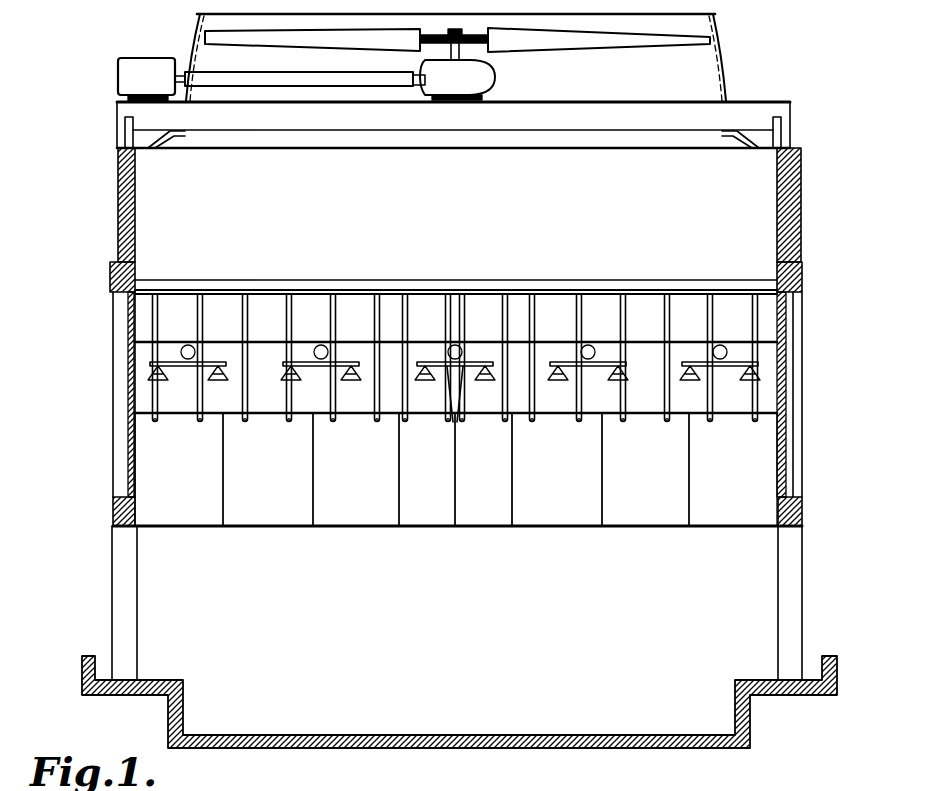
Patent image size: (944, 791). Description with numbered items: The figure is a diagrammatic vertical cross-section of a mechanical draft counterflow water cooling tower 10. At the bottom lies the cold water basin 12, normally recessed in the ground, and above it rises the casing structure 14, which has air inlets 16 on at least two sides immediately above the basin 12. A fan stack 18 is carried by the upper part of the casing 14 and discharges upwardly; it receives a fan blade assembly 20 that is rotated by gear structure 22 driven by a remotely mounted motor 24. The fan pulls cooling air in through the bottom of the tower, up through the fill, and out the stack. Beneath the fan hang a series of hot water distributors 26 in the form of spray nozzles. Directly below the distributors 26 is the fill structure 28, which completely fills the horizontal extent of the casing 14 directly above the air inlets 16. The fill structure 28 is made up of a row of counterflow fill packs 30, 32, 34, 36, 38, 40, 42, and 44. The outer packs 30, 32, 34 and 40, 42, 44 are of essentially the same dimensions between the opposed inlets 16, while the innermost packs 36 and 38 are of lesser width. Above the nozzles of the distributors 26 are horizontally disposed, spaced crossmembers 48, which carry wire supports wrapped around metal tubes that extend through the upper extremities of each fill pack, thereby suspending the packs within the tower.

The water cooling tower 10 is at (100, 201).
The cold water basin 12 is at (596, 749).
The casing structure 14 is at (776, 216).
The air inlets 16 is at (118, 530).
The fan stack 18 is at (716, 74).
The fan blade assembly 20 is at (599, 37).
The gear structure 22 is at (491, 76).
The motor 24 is at (118, 72).
The hot water distributors 26 is at (345, 362).
The fill structure 28 is at (362, 527).
The counterflow fill pack 30 is at (195, 515).
The counterflow fill pack 32 is at (265, 515).
The counterflow fill pack 34 is at (338, 515).
The counterflow fill pack 36 is at (435, 518).
The counterflow fill pack 38 is at (478, 518).
The counterflow fill pack 40 is at (550, 518).
The counterflow fill pack 42 is at (618, 518).
The counterflow fill pack 44 is at (717, 518).
The crossmembers 48 is at (312, 290).